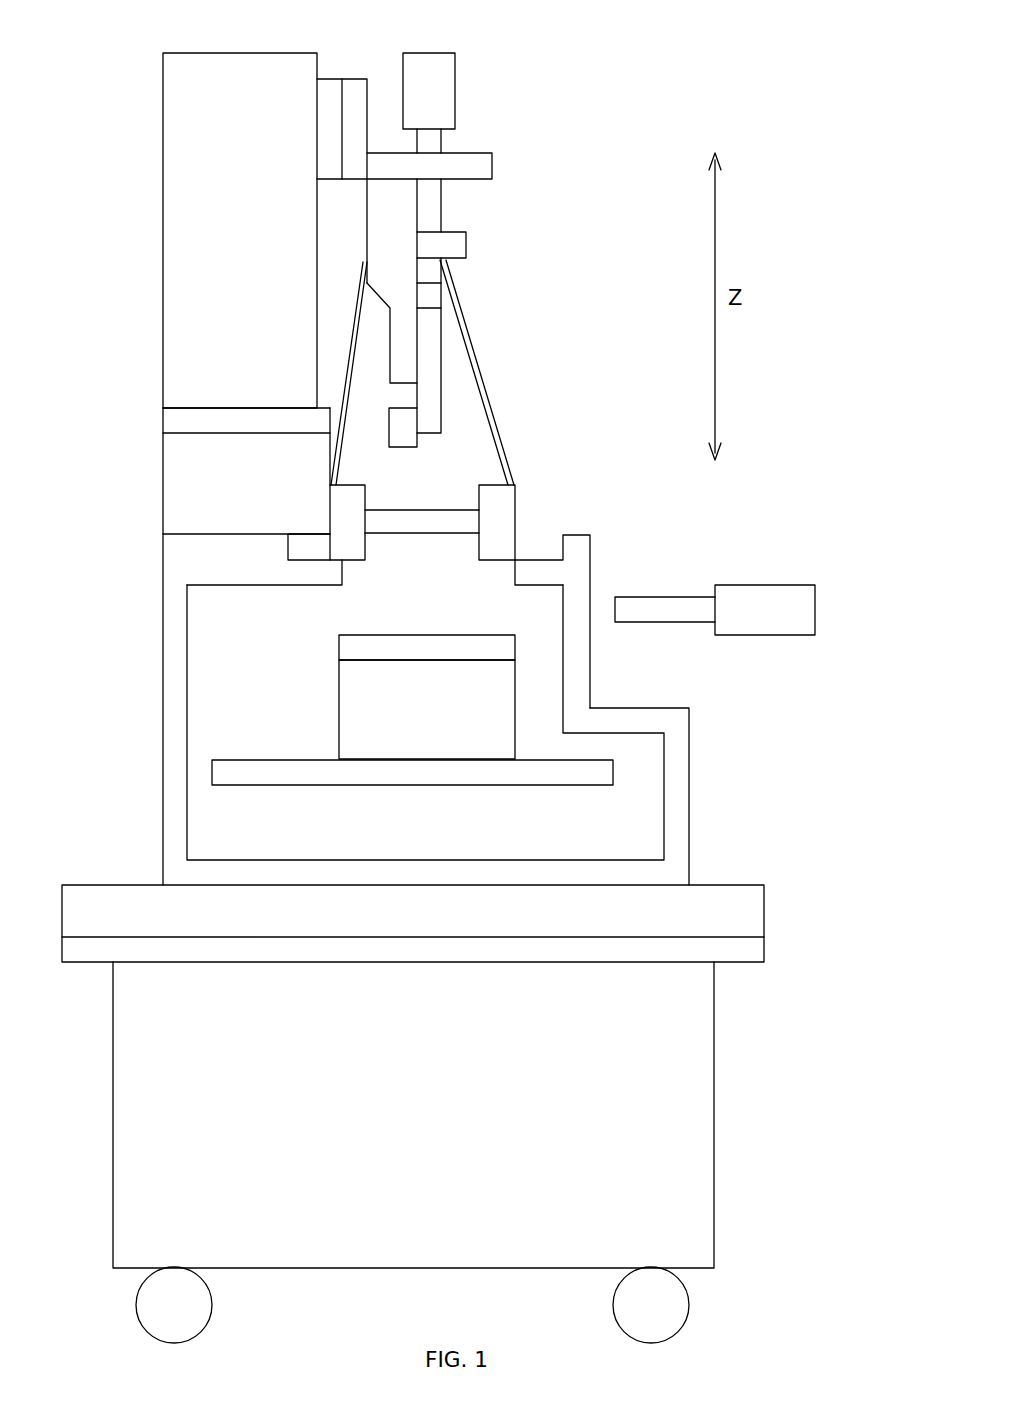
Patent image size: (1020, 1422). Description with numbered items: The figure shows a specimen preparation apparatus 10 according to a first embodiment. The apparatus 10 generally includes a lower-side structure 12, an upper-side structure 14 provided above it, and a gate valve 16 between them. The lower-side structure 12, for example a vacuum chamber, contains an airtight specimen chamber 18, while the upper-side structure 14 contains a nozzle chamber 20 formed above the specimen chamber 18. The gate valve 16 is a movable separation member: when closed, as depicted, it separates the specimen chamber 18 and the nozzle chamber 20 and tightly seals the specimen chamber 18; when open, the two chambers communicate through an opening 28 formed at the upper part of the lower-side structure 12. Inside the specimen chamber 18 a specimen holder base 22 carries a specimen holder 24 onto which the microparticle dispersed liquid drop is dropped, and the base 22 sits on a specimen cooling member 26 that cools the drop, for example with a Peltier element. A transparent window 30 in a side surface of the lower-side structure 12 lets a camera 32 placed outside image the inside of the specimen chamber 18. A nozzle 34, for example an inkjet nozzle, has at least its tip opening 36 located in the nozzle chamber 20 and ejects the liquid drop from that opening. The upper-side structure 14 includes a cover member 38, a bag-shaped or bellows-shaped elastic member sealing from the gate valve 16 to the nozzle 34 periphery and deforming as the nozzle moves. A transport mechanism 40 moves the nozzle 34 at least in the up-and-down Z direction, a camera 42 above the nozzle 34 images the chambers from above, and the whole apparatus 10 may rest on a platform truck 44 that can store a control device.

The specimen preparation apparatus 10 is at (573, 13).
The lower-side structure 12 is at (690, 808).
The upper-side structure 14 is at (507, 383).
The gate valve 16 is at (453, 509).
The specimen chamber 18 is at (244, 631).
The nozzle chamber 20 is at (375, 472).
The specimen holder base 22 is at (339, 710).
The specimen holder 24 is at (339, 647).
The specimen cooling member 26 is at (212, 773).
The opening 28 is at (513, 573).
The window 30 is at (590, 660).
The camera 32 is at (730, 585).
The nozzle 34 is at (442, 345).
The tip opening 36 is at (427, 435).
The cover member 38 is at (500, 430).
The transport mechanism 40 is at (163, 175).
The camera 42 is at (455, 93).
The platform truck 44 is at (715, 1075).